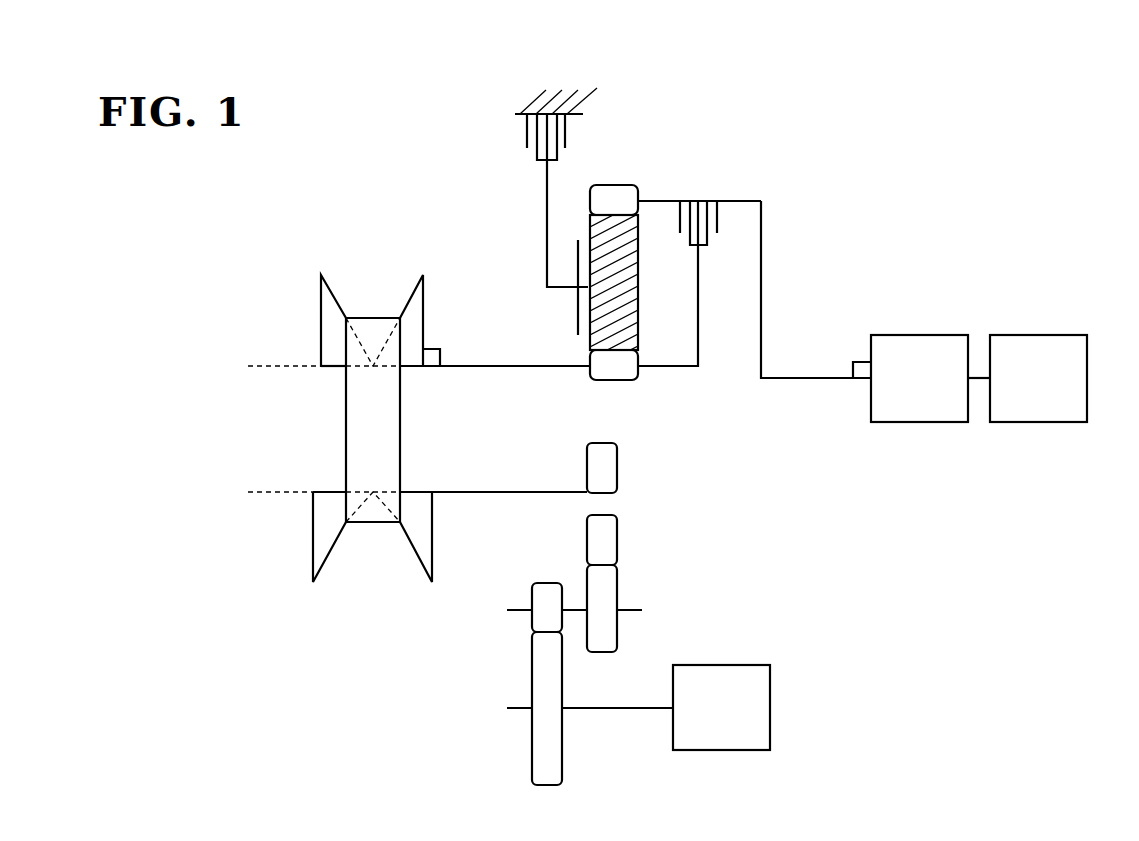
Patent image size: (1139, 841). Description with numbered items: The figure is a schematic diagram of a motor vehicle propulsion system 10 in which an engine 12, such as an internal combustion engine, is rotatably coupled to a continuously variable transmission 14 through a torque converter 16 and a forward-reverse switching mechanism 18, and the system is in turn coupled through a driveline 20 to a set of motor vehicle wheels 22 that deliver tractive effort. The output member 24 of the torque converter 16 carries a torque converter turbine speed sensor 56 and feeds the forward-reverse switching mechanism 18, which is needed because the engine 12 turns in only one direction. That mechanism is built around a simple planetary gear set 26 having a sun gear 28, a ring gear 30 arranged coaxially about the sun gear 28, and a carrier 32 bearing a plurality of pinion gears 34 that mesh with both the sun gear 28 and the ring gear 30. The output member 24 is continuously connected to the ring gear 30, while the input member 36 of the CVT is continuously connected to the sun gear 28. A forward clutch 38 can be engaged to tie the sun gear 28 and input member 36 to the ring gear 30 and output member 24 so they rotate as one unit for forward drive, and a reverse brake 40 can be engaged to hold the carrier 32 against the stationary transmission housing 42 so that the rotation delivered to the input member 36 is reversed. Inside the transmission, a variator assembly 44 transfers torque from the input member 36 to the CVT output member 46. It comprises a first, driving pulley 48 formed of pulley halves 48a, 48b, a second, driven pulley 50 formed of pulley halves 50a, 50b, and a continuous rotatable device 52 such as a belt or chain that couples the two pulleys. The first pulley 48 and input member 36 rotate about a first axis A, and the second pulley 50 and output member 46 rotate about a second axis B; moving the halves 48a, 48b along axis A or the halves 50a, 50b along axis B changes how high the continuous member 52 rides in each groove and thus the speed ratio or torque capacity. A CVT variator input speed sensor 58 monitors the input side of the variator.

The motor vehicle propulsion system 10 is at (930, 130).
The engine 12 is at (1038, 378).
The continuously variable transmission 14 is at (349, 424).
The torque converter 16 is at (930, 378).
The forward-reverse switching mechanism 18 is at (621, 203).
The driveline 20 is at (652, 556).
The motor vehicle wheels 22 is at (721, 707).
The output member 24 is at (815, 382).
The simple planetary gear set 26 is at (570, 326).
The sun gear 28 is at (614, 365).
The ring gear 30 is at (614, 200).
The carrier 32 is at (578, 268).
The pinion gears 34 is at (622, 254).
The input member 36 is at (542, 372).
The forward clutch 38 is at (710, 188).
The reverse brake 40 is at (515, 135).
The transmission housing 42 is at (562, 100).
The variator assembly 44 is at (358, 424).
The CVT output member 46 is at (495, 497).
The first pulley 48 is at (349, 284).
The first pulley half 48a is at (328, 308).
The first pulley half 48b is at (420, 307).
The second pulley 50 is at (373, 570).
The second pulley half 50a is at (323, 540).
The second pulley half 50b is at (422, 540).
The continuous rotatable device 52 is at (377, 440).
The torque converter turbine speed sensor 56 is at (864, 363).
The CVT variator input speed sensor 58 is at (436, 350).
The first axis A is at (258, 368).
The second axis B is at (258, 493).